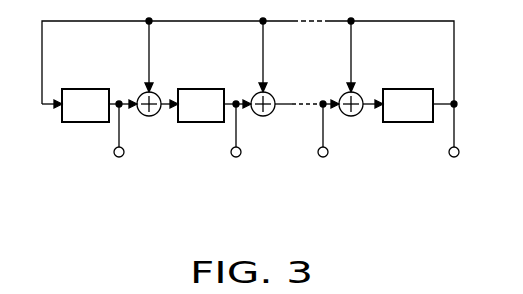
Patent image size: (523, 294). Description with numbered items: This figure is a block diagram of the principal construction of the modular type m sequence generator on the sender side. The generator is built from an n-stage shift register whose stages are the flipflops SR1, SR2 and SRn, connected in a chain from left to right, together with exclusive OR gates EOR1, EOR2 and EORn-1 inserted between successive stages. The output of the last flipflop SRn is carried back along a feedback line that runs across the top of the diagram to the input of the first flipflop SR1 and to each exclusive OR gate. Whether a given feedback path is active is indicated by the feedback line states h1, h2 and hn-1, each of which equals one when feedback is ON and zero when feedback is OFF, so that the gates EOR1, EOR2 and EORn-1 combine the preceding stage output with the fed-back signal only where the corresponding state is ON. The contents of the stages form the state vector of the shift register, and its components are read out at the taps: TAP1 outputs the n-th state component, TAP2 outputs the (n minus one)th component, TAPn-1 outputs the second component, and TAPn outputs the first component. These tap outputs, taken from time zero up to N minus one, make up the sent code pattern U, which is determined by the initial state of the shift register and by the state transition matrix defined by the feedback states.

The flipflop SR1 is at (85, 105).
The flipflop SR2 is at (201, 105).
The flipflop SRn is at (408, 105).
The exclusive OR gate EOR1 is at (150, 120).
The exclusive OR gate EOR2 is at (270, 120).
The exclusive OR gate EORn-1 is at (363, 120).
The feedback line state h1 is at (133, 53).
The feedback line state h2 is at (245, 53).
The feedback line state hn-1 is at (324, 53).
The tap TAP1 is at (112, 162).
The tap TAP2 is at (245, 162).
The tap TAPn-1 is at (342, 162).
The tap TAPn is at (458, 162).